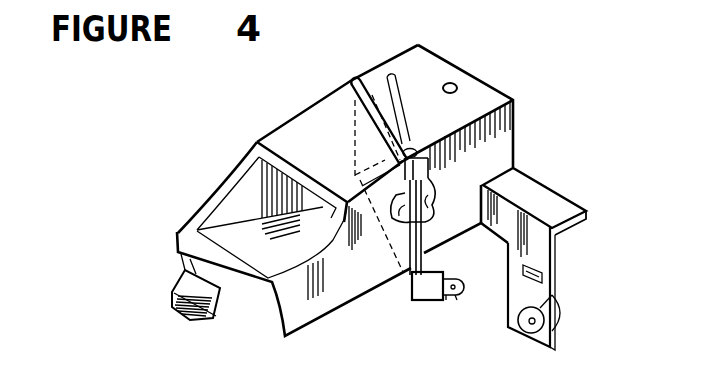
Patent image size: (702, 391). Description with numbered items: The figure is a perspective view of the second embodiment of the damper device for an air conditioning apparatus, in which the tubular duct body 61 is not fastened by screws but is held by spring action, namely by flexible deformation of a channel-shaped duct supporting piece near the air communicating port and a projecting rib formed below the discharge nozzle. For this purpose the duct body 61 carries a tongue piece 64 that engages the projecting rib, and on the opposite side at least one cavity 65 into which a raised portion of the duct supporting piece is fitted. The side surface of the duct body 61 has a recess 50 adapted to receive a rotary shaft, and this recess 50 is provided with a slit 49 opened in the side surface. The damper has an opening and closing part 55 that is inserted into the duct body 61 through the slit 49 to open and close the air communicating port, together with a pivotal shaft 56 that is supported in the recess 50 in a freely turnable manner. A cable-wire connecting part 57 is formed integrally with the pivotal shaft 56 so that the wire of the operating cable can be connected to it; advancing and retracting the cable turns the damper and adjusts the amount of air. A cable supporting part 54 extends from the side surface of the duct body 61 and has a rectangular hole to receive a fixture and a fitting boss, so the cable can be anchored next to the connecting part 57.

The duct body 61 is at (283, 127).
The opening and closing part 55 is at (357, 98).
The cavity 65 is at (456, 86).
The cable supporting part 54 is at (566, 201).
The recess 50 is at (426, 233).
The slit 49 is at (392, 217).
The pivotal shaft 56 is at (407, 300).
The cable-wire connecting part 57 is at (453, 295).
The tongue piece 64 is at (207, 320).